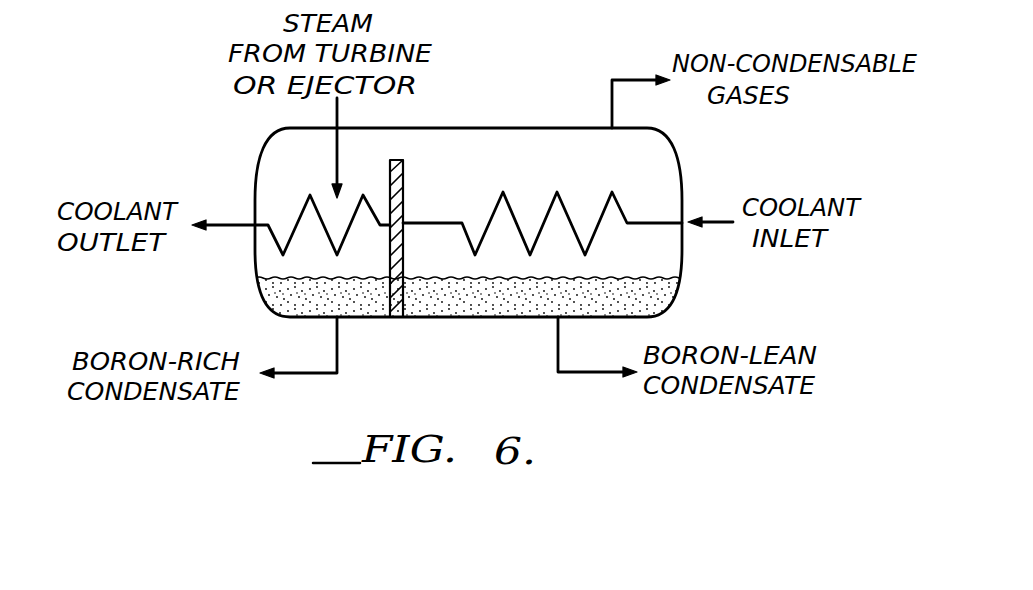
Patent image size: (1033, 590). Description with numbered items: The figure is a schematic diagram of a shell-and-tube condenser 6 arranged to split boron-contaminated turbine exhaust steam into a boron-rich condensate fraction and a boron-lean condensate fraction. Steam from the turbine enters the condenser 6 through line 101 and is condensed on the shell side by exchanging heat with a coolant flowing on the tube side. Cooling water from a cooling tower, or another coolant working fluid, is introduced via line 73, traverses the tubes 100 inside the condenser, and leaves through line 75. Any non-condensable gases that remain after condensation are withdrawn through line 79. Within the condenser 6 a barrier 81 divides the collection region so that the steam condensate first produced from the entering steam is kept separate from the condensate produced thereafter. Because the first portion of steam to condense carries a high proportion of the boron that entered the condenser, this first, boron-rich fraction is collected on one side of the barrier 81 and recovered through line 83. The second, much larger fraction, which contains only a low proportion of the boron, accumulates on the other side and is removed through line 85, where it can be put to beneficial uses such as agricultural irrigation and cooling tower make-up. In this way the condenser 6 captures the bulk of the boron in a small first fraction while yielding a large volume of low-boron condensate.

The condenser 6 is at (480, 128).
The line 73 is at (715, 223).
The line 75 is at (228, 226).
The line 79 is at (622, 80).
The barrier 81 is at (403, 185).
The line 83 is at (337, 350).
The line 85 is at (558, 350).
The tubes 100 is at (302, 193).
The fluid communication system 101 is at (337, 116).